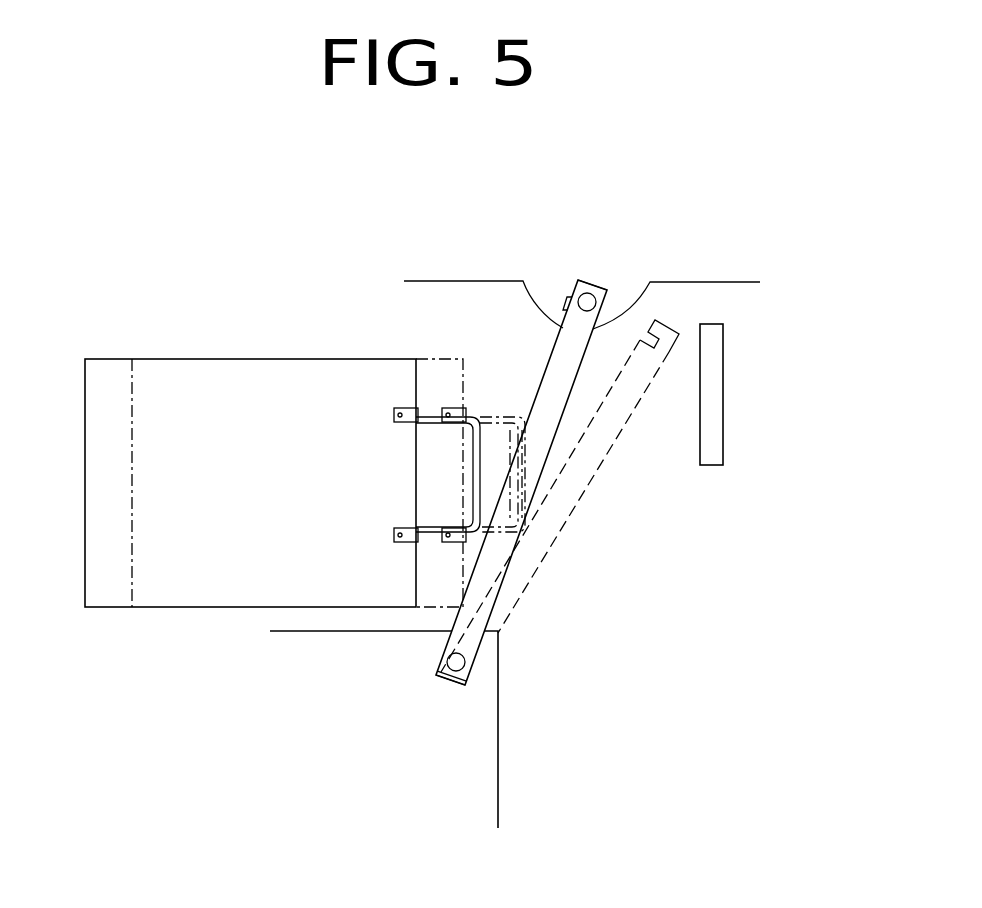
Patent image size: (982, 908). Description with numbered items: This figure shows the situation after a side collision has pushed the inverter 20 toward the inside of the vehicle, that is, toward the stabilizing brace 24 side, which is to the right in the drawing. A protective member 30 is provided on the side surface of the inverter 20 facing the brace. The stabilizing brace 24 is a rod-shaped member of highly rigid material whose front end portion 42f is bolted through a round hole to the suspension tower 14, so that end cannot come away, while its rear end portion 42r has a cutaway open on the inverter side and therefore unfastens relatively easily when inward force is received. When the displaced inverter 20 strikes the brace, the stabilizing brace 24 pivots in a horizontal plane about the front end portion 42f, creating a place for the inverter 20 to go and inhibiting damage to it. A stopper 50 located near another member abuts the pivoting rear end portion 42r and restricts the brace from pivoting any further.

The suspension tower 14 is at (478, 728).
The inverter 20 is at (108, 380).
The stabilizing brace 24 is at (547, 423).
The protective member 30 is at (433, 413).
The rear end portion 42r is at (605, 288).
The front end portion 42f is at (468, 675).
The stopper 50 is at (710, 390).